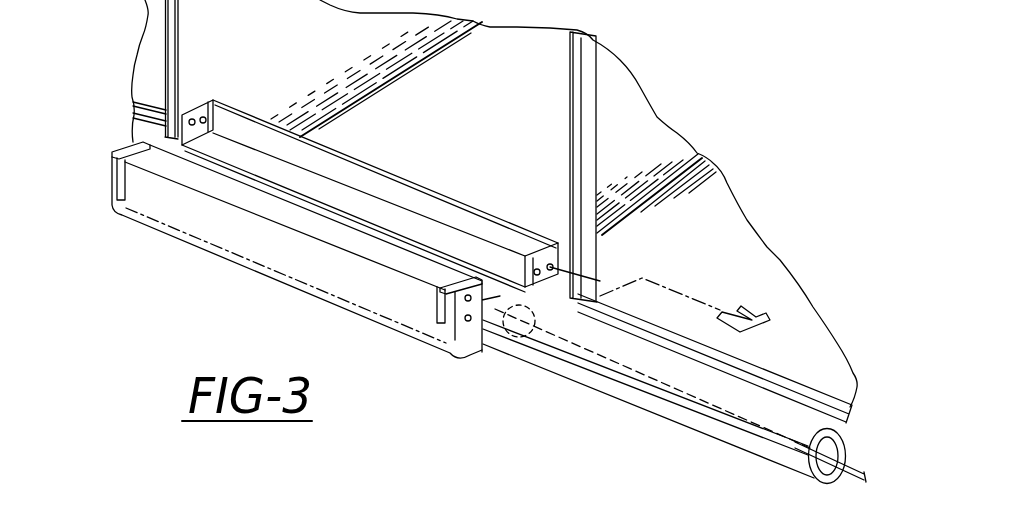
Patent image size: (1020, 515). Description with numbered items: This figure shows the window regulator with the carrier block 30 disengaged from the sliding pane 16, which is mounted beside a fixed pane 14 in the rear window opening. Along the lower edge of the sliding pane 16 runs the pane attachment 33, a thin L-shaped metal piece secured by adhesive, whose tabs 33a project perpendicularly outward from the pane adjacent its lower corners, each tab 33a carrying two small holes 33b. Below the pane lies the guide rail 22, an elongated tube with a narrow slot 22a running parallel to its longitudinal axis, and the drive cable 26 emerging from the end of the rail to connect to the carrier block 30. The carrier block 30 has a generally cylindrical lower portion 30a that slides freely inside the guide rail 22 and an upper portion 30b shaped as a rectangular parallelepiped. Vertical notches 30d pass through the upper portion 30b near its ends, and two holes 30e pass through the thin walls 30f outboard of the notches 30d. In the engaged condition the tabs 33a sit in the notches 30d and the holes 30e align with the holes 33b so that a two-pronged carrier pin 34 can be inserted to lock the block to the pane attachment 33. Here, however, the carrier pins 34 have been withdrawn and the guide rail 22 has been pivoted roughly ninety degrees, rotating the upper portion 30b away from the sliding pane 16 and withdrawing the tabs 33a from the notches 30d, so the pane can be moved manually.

The fixed pane 14 is at (656, 160).
The sliding pane 16 is at (254, 33).
The guide rail 22 is at (667, 389).
The slot 22a is at (731, 415).
The drive cable 26 is at (862, 467).
The carrier block 30 is at (284, 279).
The lower portion 30a is at (523, 334).
The upper portion 30b is at (242, 232).
The vertical notches 30d is at (119, 180).
The holes 30e is at (472, 322).
The thin walls 30f is at (113, 152).
The pane attachment 33 is at (328, 259).
The tabs 33a is at (184, 117).
The holes 33b is at (184, 118).
The carrier pin 34 is at (768, 318).